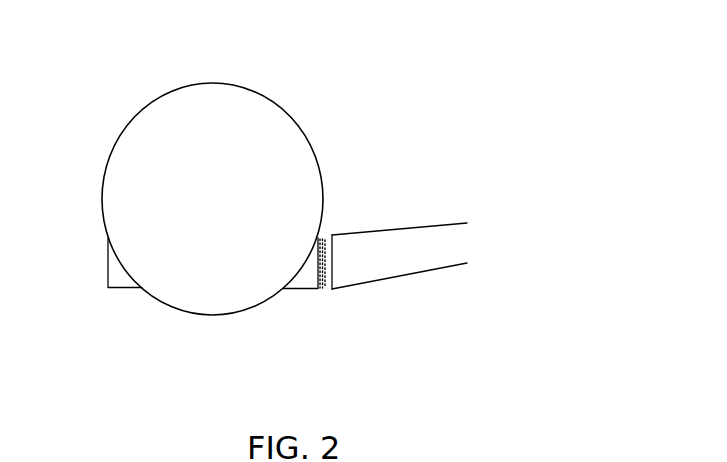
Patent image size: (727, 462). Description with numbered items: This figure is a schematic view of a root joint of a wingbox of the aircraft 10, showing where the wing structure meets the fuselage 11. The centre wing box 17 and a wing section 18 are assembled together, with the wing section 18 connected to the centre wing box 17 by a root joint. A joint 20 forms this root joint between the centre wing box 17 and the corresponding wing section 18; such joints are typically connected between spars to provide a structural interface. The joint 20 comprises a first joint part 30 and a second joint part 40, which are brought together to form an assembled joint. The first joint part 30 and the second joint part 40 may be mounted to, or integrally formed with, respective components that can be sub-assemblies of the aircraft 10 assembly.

The aircraft 10 is at (483, 112).
The fuselage 11 is at (250, 88).
The centre wing box 17 is at (302, 290).
The wing section 18 is at (425, 225).
The joint 20 is at (339, 192).
The first joint part 30 is at (322, 282).
The second joint part 40 is at (332, 278).